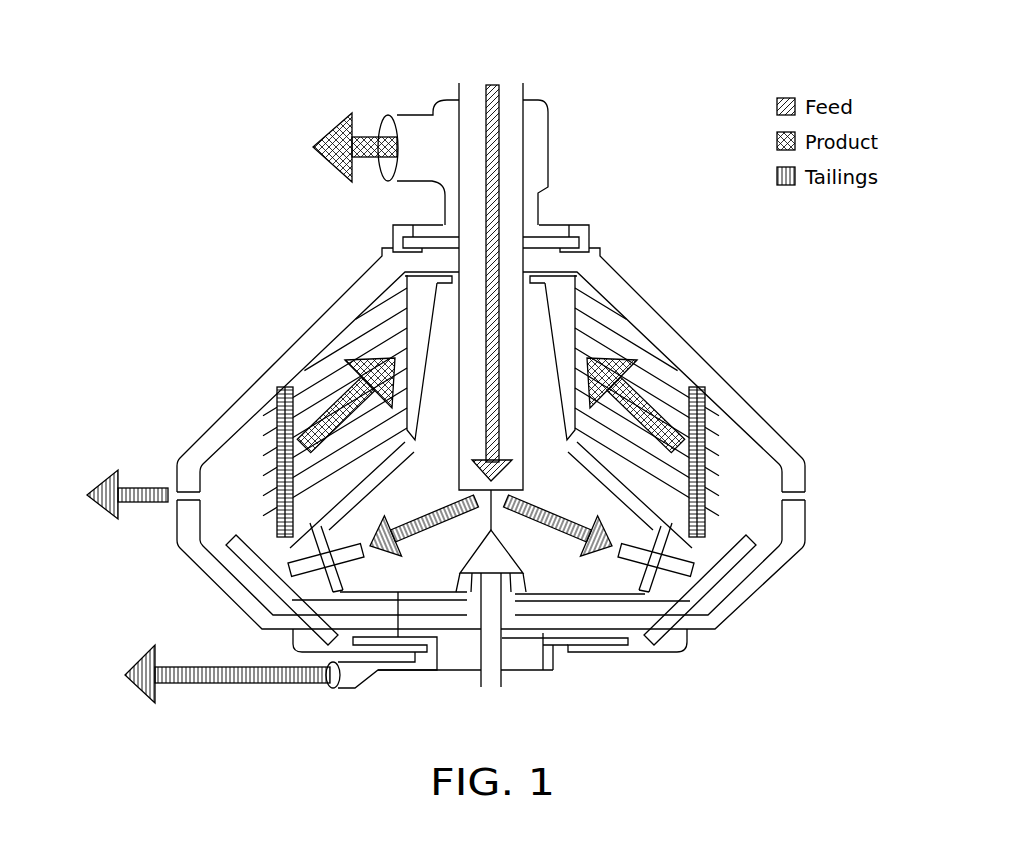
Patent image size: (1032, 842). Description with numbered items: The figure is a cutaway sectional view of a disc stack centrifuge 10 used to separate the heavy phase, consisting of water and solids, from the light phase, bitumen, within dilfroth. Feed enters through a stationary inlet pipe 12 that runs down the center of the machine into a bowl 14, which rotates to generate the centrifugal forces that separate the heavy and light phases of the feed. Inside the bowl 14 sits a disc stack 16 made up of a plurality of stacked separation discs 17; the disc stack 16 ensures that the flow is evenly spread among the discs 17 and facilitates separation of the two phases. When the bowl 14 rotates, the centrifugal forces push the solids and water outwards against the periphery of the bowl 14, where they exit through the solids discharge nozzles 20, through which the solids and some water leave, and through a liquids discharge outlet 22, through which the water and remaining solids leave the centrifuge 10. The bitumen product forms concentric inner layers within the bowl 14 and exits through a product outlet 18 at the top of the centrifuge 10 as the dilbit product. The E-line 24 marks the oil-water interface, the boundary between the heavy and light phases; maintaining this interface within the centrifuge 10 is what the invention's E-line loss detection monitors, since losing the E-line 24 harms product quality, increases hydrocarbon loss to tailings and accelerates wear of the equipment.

The disc stack centrifuge 10 is at (120, 97).
The stationary inlet pipe 12 is at (515, 97).
The bowl 14 is at (703, 322).
The disc stack 16 is at (612, 483).
The separation discs 17 is at (677, 404).
The product outlet 18 is at (388, 127).
The solids discharge nozzles 20 is at (188, 493).
The liquids discharge outlet 22 is at (330, 688).
The E-line 24 is at (277, 495).